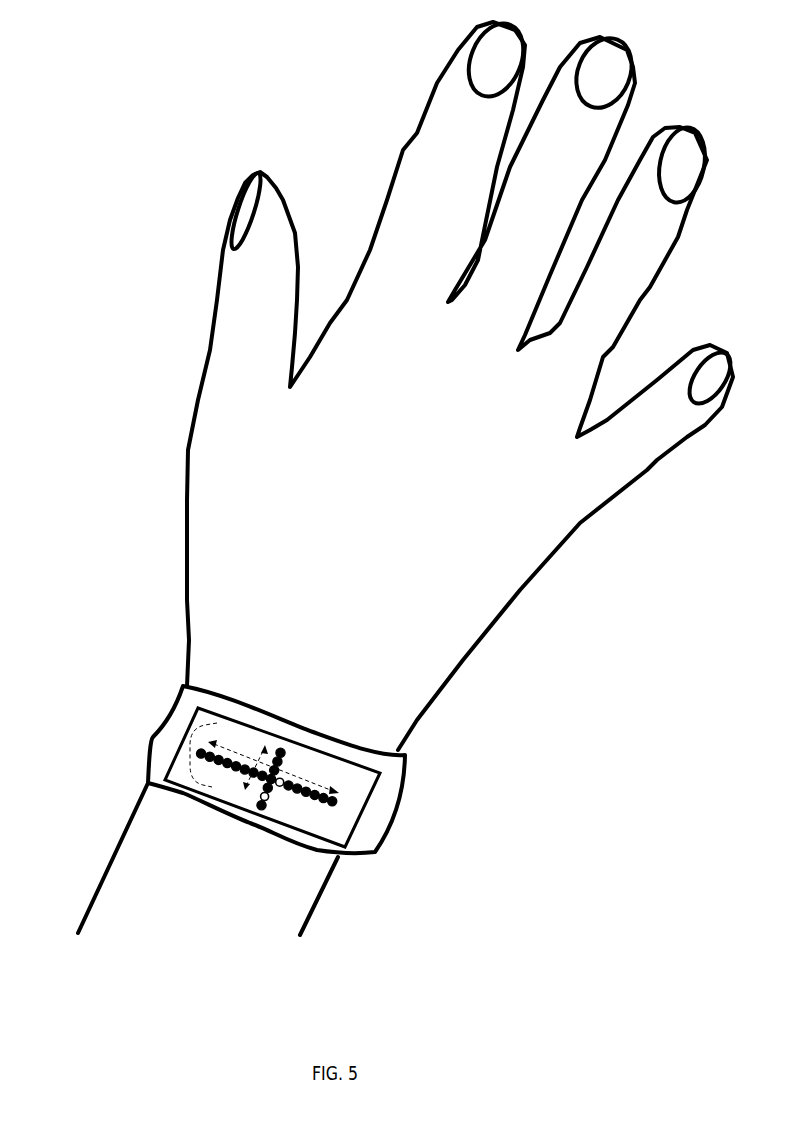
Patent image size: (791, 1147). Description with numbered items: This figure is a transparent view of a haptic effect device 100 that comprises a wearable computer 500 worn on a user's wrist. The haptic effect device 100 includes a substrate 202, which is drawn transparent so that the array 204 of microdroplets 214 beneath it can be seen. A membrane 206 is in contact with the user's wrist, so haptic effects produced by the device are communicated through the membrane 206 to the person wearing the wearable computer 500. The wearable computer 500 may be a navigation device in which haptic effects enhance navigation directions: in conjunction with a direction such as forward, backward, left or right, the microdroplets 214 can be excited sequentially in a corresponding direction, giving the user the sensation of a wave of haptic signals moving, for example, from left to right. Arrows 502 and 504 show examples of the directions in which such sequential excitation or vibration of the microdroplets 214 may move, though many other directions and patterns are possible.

The haptic effect device 100 is at (205, 731).
The substrate 202 is at (325, 853).
The array 204 is at (190, 748).
The membrane 206 is at (345, 825).
The microdroplets 214 is at (258, 815).
The wearable computer 500 is at (392, 803).
The arrow 502 is at (264, 745).
The arrow 504 is at (318, 775).